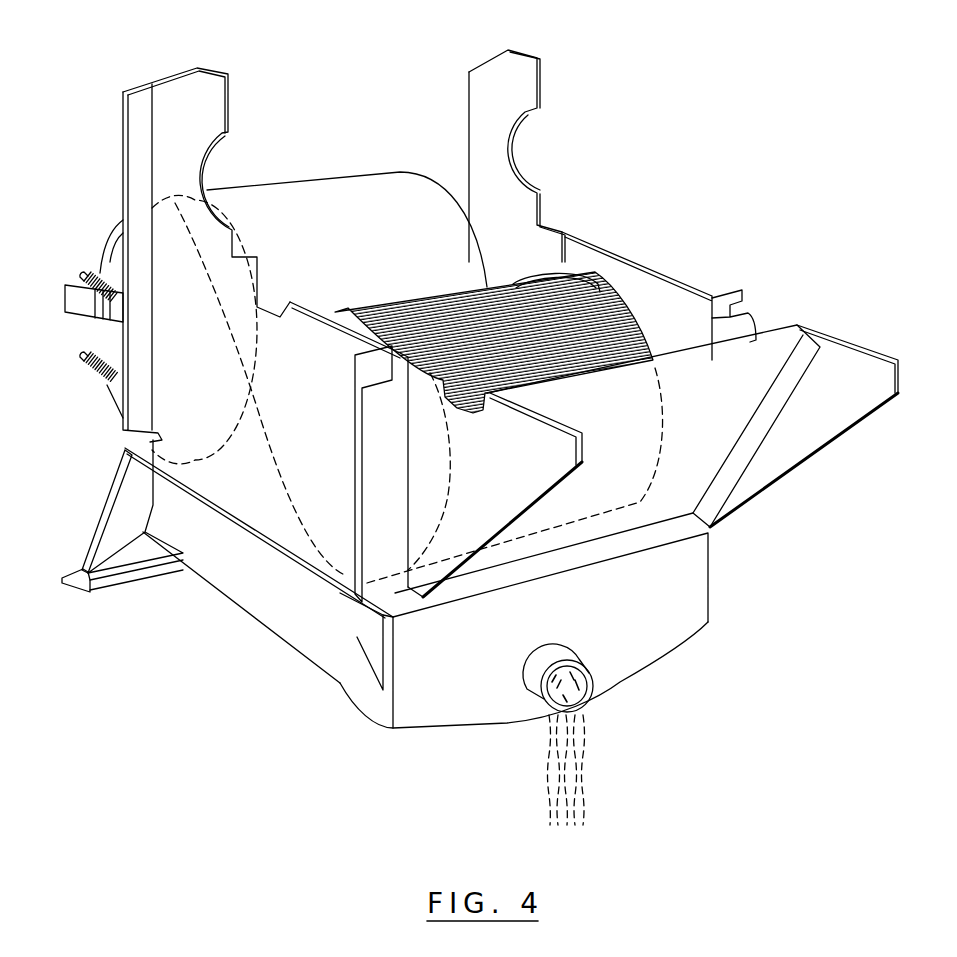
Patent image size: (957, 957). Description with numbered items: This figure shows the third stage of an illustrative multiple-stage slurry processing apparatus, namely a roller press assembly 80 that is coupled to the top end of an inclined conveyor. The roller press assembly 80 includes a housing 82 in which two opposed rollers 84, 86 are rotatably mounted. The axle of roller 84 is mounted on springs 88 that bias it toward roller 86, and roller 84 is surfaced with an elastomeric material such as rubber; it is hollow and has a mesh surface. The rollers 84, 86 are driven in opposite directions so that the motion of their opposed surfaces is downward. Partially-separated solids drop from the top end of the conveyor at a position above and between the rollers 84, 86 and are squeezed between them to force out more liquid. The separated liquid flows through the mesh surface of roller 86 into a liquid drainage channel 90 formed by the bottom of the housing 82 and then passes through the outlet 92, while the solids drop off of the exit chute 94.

The roller press assembly 80 is at (660, 58).
The housing 82 is at (727, 392).
The roller 84 is at (345, 177).
The roller 86 is at (548, 300).
The springs 88 is at (100, 352).
The liquid drainage channel 90 is at (687, 595).
The outlet 92 is at (593, 672).
The exit chute 94 is at (125, 520).